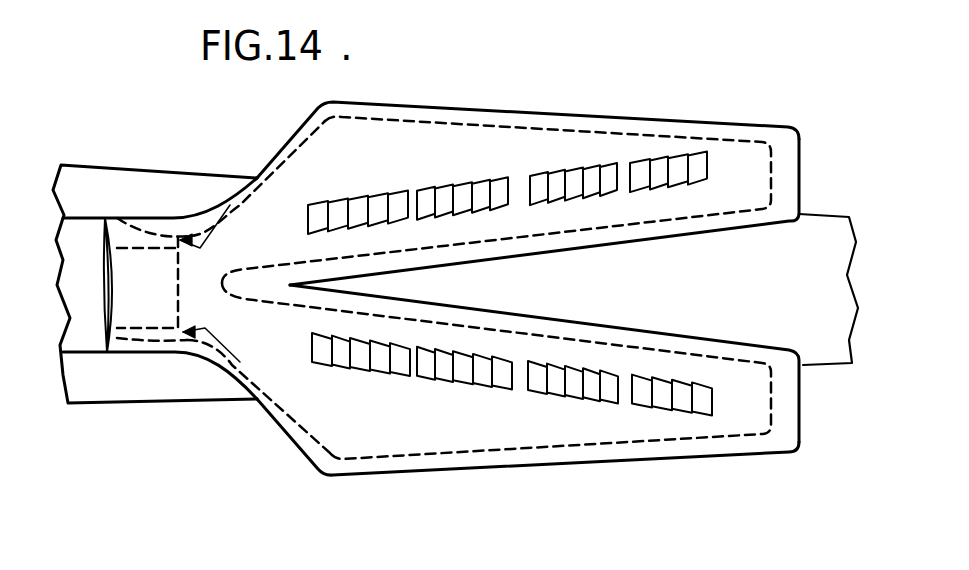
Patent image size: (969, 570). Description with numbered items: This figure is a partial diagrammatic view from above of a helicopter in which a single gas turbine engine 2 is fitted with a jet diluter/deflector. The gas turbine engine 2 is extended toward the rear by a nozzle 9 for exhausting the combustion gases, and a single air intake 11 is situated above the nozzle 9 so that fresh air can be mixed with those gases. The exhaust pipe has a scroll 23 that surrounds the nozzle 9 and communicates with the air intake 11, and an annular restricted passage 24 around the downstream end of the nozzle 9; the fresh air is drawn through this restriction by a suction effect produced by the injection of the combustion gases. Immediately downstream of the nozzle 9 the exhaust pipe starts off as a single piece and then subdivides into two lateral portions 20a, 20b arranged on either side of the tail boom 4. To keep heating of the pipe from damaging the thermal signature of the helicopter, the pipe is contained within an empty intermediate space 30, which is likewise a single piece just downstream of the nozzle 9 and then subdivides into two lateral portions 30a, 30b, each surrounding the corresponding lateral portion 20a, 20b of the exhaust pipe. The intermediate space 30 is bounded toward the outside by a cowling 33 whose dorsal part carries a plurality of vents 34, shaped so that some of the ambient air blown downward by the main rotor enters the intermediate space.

The gas turbine engine 2 is at (82, 330).
The tail boom 4 is at (828, 238).
The nozzle 9 is at (158, 282).
The air intake 11 is at (108, 225).
The lateral portion of exhaust pipe 20a is at (405, 185).
The lateral portion of exhaust pipe 20b is at (452, 423).
The scroll 23 is at (133, 235).
The annular restricted passage 24 is at (203, 243).
The intermediate space 30 is at (192, 234).
The lateral portion of intermediate space 30a is at (515, 245).
The lateral portion of intermediate space 30b is at (740, 440).
The cowling 33 is at (623, 118).
The vents 34 is at (683, 170).